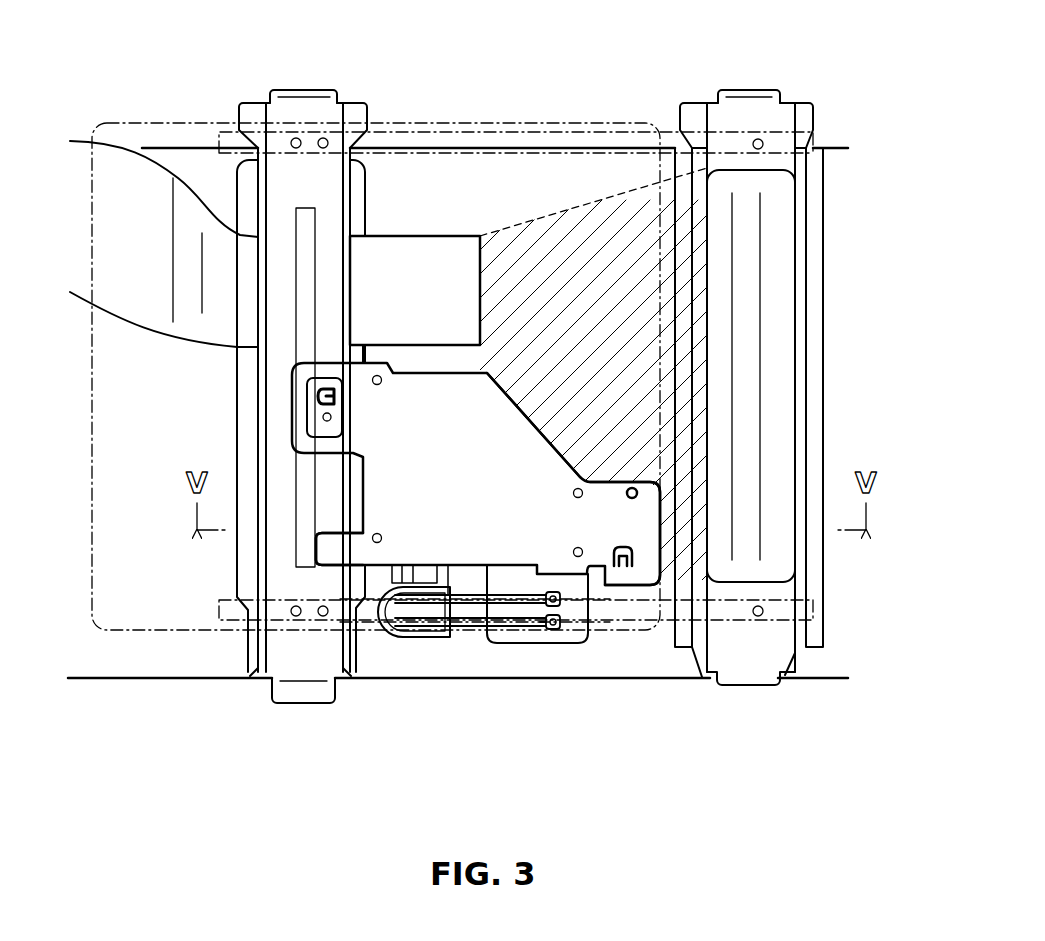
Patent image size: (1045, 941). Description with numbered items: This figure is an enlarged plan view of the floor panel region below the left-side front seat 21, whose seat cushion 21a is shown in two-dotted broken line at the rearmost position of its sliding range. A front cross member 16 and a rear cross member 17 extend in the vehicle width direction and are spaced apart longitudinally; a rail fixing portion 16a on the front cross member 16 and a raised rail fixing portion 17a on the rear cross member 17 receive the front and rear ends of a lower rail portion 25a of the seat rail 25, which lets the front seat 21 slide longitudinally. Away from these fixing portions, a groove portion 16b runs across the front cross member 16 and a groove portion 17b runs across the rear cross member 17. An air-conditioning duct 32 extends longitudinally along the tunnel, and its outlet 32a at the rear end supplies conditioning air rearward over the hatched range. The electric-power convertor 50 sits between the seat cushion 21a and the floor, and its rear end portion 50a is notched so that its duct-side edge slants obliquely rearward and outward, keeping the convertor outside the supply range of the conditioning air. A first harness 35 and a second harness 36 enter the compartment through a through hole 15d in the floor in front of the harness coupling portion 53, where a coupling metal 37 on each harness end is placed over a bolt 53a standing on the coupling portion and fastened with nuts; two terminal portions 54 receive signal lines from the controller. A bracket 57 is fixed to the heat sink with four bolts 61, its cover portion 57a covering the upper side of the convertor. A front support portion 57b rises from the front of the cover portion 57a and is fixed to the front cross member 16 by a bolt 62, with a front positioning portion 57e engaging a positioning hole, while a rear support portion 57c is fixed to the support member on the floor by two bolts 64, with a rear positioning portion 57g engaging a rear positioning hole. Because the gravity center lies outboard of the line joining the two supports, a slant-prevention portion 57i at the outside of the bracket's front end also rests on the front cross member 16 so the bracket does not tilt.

The through hole 15d is at (400, 640).
The front cross member 16 is at (240, 396).
The rail fixing portion 16a is at (312, 138).
The groove portion 16b is at (296, 270).
The rear cross member 17 is at (802, 392).
The rail fixing portion 17a is at (745, 138).
The groove portion 17b is at (750, 290).
The front seat 21 is at (458, 360).
The seat cushion 21a is at (162, 120).
The seat rail 25 is at (487, 401).
The lower rail portion 25a is at (510, 132).
The air-conditioning duct 32 is at (418, 236).
The outlet 32a is at (487, 246).
The first harness 35 is at (497, 610).
The second harness 36 is at (537, 630).
The coupling metal 37 is at (562, 626).
The electric-power convertor 50 is at (481, 631).
The rear end portion 50a is at (580, 360).
The harness coupling portion 53 is at (503, 577).
The bolt 53a is at (553, 632).
The terminal portion 54 is at (428, 585).
The bracket 57 is at (423, 371).
The cover portion 57a is at (453, 393).
The front support portion 57b is at (300, 378).
The rear support portion 57c is at (662, 522).
The front positioning portion 57e is at (320, 397).
The rear positioning portion 57g is at (625, 572).
The slant-prevention portion 57i is at (310, 543).
The bolt 61 is at (381, 383).
The bolt 62 is at (332, 417).
The bolt 64 is at (629, 498).